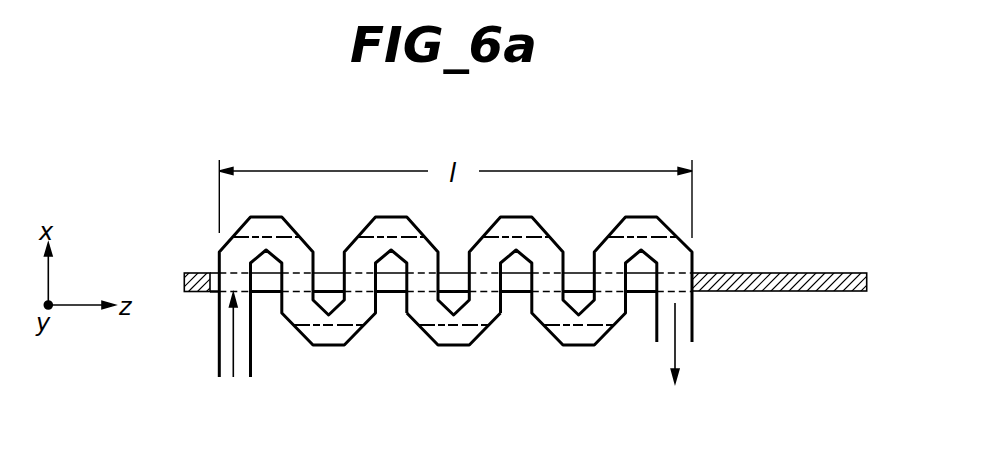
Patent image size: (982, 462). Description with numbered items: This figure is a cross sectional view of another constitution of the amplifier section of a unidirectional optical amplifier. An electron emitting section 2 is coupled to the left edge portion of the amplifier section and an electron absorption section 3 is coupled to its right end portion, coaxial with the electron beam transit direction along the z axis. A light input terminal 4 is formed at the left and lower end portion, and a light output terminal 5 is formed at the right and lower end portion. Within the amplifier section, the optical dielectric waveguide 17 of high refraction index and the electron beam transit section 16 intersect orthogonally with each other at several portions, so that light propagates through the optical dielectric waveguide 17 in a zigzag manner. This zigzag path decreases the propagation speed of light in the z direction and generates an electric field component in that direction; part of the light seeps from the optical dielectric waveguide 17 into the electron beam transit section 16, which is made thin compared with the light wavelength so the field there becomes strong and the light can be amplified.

The electron emitting section 2 is at (192, 272).
The electron absorption section 3 is at (772, 272).
The light input terminal 4 is at (226, 357).
The light output terminal 5 is at (685, 323).
The electron beam transit section 16 is at (393, 286).
The optical dielectric waveguide 17 is at (462, 338).